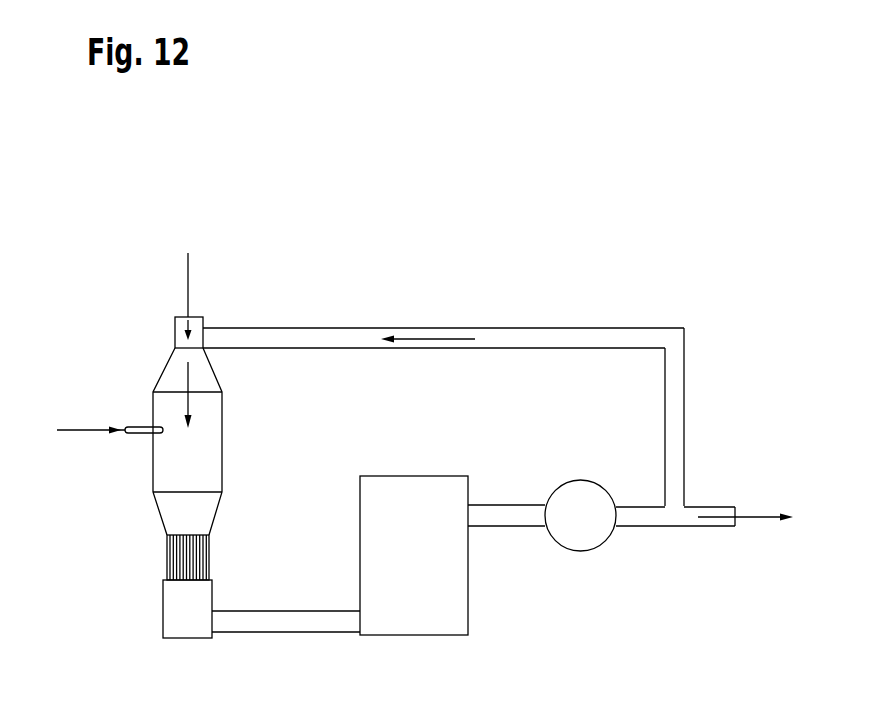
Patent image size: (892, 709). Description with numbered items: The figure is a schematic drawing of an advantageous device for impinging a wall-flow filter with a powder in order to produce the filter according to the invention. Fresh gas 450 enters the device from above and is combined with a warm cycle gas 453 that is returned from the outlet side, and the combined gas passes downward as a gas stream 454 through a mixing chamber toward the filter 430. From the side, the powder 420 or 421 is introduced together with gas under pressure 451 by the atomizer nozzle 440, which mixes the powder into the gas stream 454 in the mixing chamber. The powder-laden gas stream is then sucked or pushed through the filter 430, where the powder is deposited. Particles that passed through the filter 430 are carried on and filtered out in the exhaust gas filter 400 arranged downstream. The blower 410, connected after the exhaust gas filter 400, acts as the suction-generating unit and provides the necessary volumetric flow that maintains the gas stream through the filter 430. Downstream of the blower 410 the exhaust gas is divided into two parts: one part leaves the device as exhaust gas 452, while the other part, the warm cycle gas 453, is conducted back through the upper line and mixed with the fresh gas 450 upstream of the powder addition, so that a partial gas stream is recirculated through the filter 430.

The exhaust gas filter 400 is at (415, 476).
The blower 410 is at (580, 480).
The powder 420 is at (129, 422).
The powder 421 is at (143, 420).
The filter 430 is at (209, 555).
The atomizer nozzle 440 is at (139, 433).
The fresh gas 450 is at (192, 265).
The pressure 451 is at (75, 433).
The exhaust gas 452 is at (746, 517).
The warm cycle gas 453 is at (435, 339).
The gas stream 454 is at (187, 401).